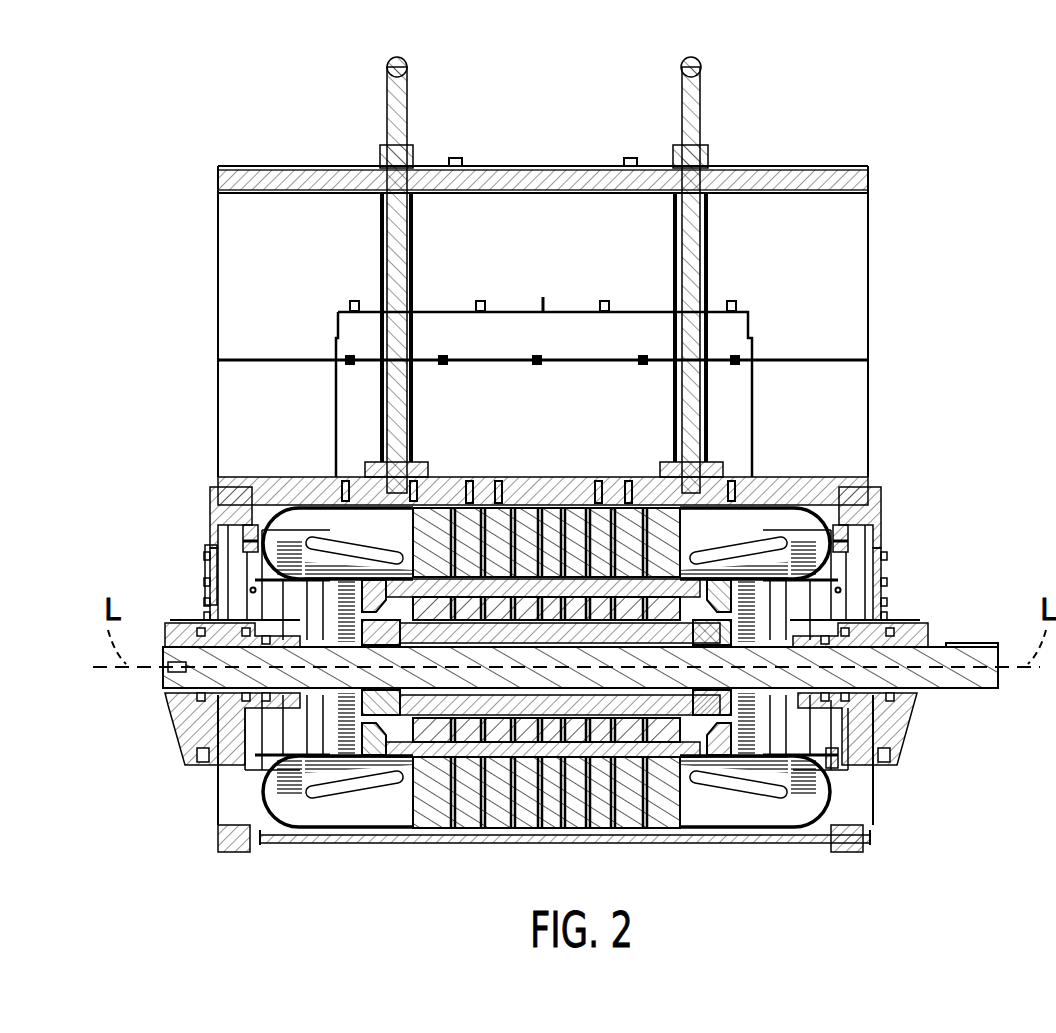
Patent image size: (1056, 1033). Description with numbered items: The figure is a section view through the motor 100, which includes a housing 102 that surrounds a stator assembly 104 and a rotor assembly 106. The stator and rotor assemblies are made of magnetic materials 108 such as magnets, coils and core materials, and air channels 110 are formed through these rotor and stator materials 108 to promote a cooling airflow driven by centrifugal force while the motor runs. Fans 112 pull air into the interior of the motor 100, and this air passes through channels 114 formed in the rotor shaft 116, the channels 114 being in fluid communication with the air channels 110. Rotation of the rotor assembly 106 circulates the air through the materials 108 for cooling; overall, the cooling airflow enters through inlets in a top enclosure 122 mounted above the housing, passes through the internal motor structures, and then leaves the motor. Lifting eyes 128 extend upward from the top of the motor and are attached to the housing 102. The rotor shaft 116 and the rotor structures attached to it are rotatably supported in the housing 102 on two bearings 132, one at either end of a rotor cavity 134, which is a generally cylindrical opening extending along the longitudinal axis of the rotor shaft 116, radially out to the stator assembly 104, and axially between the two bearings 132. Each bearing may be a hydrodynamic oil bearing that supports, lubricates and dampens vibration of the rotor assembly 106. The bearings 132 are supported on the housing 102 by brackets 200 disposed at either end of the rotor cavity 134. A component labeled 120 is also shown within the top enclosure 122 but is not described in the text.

The motor 100 is at (952, 105).
The housing 102 is at (660, 605).
The stator assembly 104 is at (497, 822).
The rotor assembly 106 is at (632, 733).
The materials 108 is at (655, 530).
The air channels 110 is at (435, 546).
The fans 112 is at (800, 615).
The channels 114 is at (330, 600).
The rotor shaft 116 is at (985, 690).
The terminal box 120 is at (560, 434).
The top enclosure 122 is at (853, 208).
The lifting eyes 128 is at (400, 82).
The bearings 132 is at (190, 713).
The rotor cavity 134 is at (838, 768).
The brackets 200 is at (230, 517).